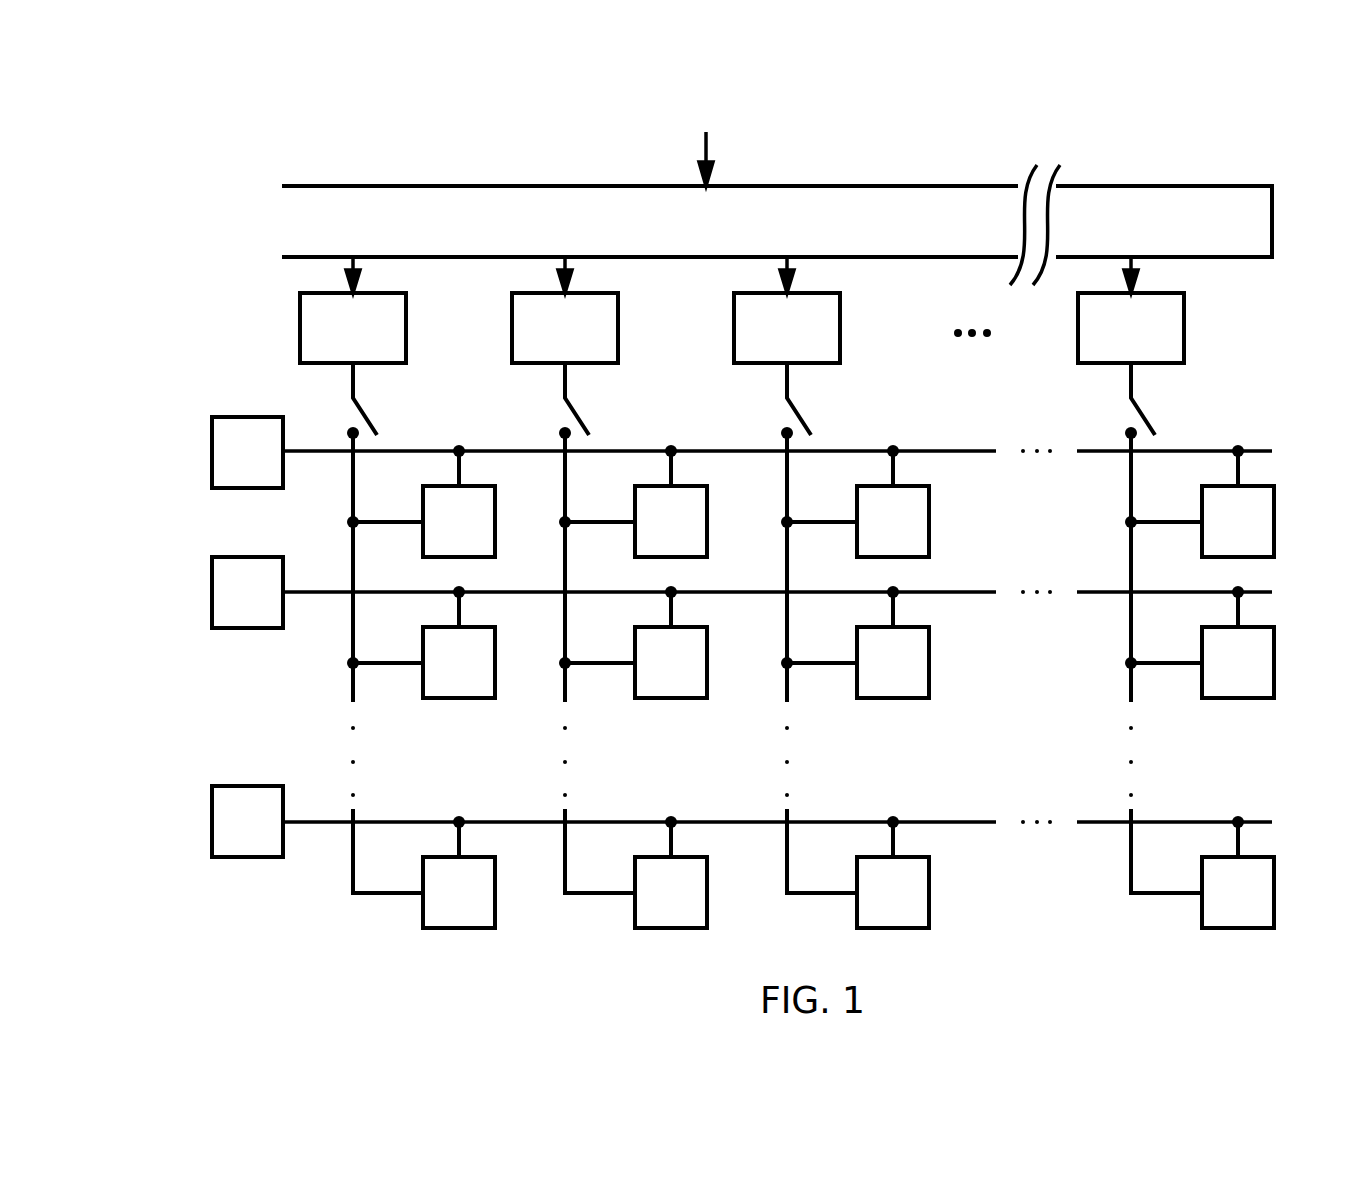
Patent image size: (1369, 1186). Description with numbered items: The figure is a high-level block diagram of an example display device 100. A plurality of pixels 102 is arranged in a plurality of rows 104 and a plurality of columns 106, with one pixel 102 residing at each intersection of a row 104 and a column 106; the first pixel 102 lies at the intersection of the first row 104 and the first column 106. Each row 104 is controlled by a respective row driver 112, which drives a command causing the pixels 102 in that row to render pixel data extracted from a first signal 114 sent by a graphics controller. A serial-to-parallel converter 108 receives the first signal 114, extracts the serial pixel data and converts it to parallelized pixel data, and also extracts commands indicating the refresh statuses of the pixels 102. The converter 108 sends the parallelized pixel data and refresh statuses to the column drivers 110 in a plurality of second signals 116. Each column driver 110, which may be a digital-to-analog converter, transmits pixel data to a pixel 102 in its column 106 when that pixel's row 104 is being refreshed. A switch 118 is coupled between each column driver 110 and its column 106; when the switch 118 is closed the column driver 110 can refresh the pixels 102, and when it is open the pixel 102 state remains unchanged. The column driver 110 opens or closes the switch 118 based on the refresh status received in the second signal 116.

The display device 100 is at (142, 143).
The pixel 102 is at (482, 533).
The row 104 is at (180, 453).
The column 106 is at (461, 942).
The serial-to-parallel converter 108 is at (793, 232).
The column driver 110 is at (373, 338).
The row driver 112 is at (270, 463).
The first signal 114 is at (707, 149).
The second signal 116 is at (356, 262).
The switch 118 is at (363, 409).